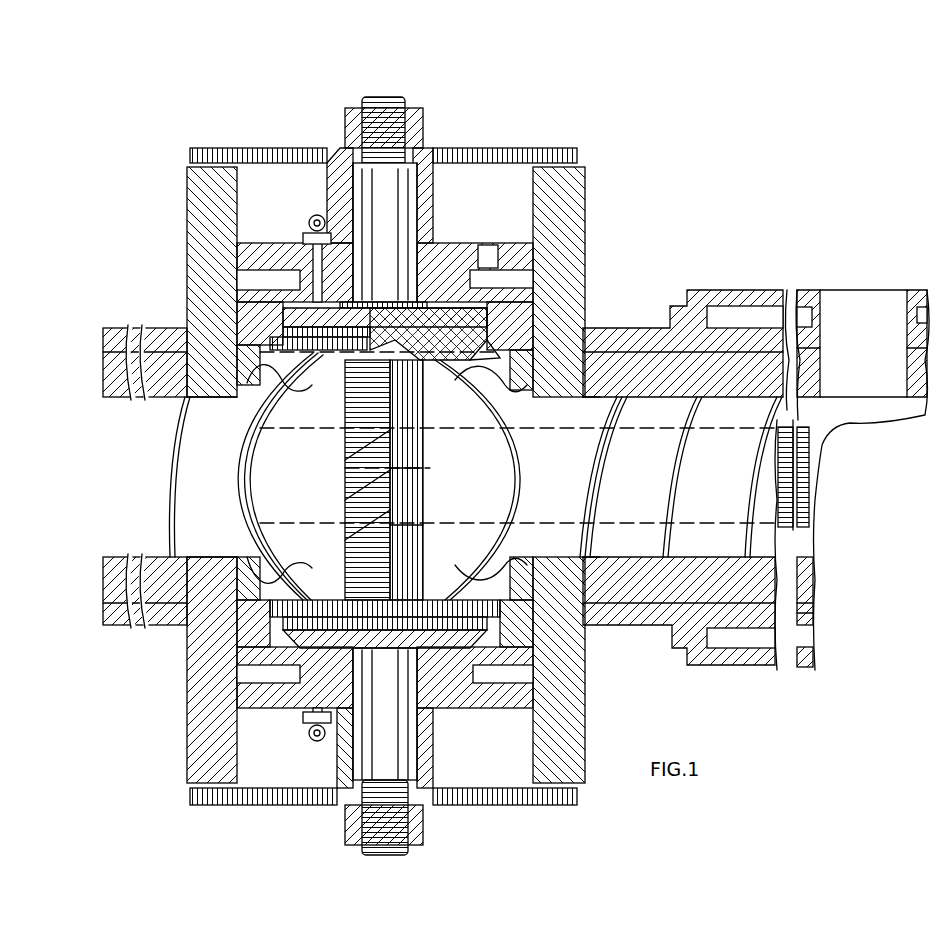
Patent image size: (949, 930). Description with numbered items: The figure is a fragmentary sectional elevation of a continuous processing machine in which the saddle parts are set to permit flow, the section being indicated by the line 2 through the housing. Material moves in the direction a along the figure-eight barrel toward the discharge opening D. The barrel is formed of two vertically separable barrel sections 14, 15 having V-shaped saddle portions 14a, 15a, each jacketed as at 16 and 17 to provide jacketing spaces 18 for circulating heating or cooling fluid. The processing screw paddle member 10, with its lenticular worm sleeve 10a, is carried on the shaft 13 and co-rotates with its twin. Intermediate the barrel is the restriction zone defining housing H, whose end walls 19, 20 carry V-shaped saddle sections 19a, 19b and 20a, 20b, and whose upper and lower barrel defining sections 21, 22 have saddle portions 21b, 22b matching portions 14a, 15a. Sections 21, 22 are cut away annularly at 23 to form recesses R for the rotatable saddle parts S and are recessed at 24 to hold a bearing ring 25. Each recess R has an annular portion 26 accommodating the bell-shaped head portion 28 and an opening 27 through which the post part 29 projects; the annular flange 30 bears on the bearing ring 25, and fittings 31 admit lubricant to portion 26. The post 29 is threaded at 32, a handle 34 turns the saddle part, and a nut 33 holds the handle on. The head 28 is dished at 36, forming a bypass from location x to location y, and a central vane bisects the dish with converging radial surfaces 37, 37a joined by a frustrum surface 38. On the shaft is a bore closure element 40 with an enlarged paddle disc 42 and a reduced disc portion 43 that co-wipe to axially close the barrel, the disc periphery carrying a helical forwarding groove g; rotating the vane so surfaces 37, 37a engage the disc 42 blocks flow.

The section line 2- 2 is at (383, 60).
The processing screw paddle member 10 is at (718, 491).
The worm sleeve 10a is at (590, 448).
The shaft 13 is at (805, 470).
The upper barrel section 14 is at (660, 330).
The V-shaped saddle portion 14a is at (140, 345).
The lower barrel section 15 is at (805, 622).
The V-shaped saddle portion 15a is at (185, 615).
The jacket 16 is at (735, 292).
The jacket 17 is at (745, 668).
The jacketing space 18 is at (760, 315).
The housing end wall 19 is at (568, 204).
The V-shaped saddle section 19a is at (555, 398).
The V-shaped saddle section 19b is at (555, 560).
The housing end wall 20 is at (190, 206).
The V-shaped saddle section 20a is at (205, 390).
The V-shaped saddle section 20b is at (250, 570).
The upper barrel defining section 21 is at (440, 252).
The saddle portion 21b is at (245, 330).
The lower barrel defining section 22 is at (556, 640).
The saddle portion 22b is at (240, 640).
The annular cut-away 23 is at (270, 402).
The annular recess 24 is at (500, 362).
The bearing ring 25 is at (498, 300).
The annular recess portion 26 is at (280, 280).
The opening 27 is at (473, 280).
The bell-shaped head portion 28 is at (488, 258).
The post part 29 is at (340, 186).
The annular flange 30 is at (500, 330).
The fitting 31 is at (312, 215).
The threaded end 32 is at (350, 118).
The nut 33 is at (348, 134).
The handle 34 is at (532, 150).
The dished portion 36 is at (360, 300).
The radial surface 37 is at (375, 350).
The radial surface 37a is at (478, 362).
The frustrum surface 38 is at (345, 396).
The bore closure element 40 is at (343, 458).
The enlarged circular paddle disc 42 is at (420, 453).
The reduced paddle disc portion 43 is at (346, 506).
The restriction zone defining housing H is at (399, 475).
The recess R is at (395, 417).
The rotatable saddle part S is at (386, 476).
The material discharge opening D is at (115, 622).
The end E is at (920, 368).
The conduit C is at (900, 330).
The direction of material flow a is at (720, 441).
The helical material forwarding groove g is at (424, 500).
The upstream location x is at (492, 467).
The downstream location y is at (263, 470).